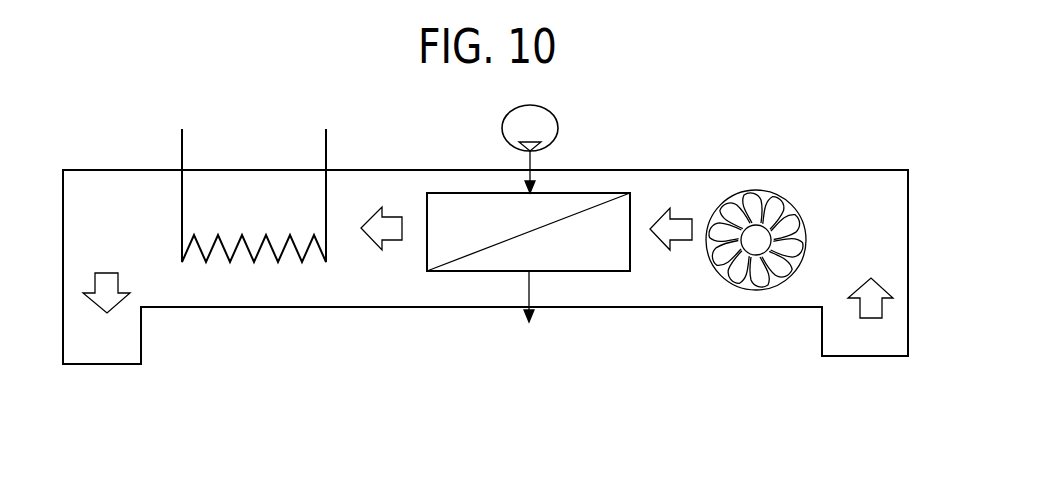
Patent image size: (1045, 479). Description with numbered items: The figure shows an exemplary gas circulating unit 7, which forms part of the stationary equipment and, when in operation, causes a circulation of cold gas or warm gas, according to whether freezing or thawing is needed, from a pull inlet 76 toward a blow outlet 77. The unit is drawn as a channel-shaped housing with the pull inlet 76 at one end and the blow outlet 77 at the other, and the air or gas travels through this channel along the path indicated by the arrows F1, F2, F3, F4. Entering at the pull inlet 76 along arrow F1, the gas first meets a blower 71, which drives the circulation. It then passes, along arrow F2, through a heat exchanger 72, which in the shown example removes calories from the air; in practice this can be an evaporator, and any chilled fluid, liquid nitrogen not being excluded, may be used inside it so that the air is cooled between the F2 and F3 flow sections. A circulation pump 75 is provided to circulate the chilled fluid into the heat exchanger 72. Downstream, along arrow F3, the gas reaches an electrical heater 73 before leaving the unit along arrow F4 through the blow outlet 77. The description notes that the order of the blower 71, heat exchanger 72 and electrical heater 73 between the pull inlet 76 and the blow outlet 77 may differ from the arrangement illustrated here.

The gas circulating unit 7 is at (855, 170).
The blower 71 is at (761, 292).
The heat exchanger 72 is at (580, 272).
The electrical heater 73 is at (303, 263).
The circulation pump 75 is at (535, 158).
The pull inlet 76 is at (878, 357).
The blow outlet 77 is at (101, 365).
The flow arrow F1 is at (880, 312).
The flow arrow F2 is at (677, 222).
The flow arrow F3 is at (380, 218).
The flow arrow F4 is at (97, 278).